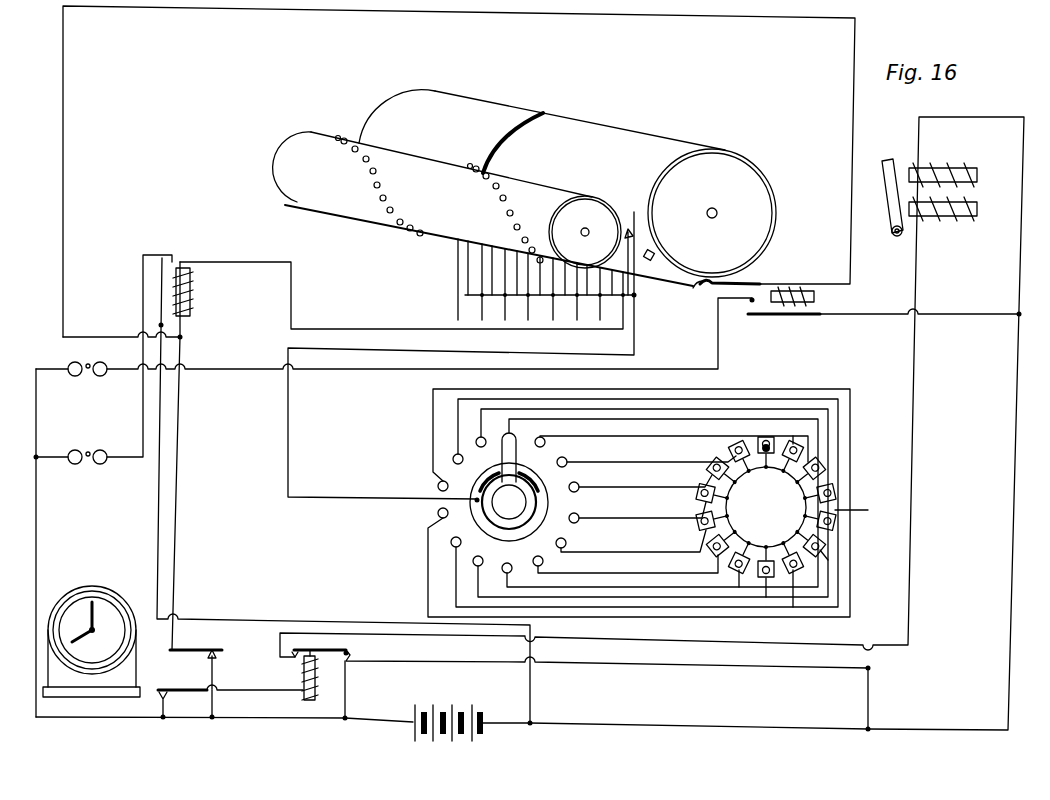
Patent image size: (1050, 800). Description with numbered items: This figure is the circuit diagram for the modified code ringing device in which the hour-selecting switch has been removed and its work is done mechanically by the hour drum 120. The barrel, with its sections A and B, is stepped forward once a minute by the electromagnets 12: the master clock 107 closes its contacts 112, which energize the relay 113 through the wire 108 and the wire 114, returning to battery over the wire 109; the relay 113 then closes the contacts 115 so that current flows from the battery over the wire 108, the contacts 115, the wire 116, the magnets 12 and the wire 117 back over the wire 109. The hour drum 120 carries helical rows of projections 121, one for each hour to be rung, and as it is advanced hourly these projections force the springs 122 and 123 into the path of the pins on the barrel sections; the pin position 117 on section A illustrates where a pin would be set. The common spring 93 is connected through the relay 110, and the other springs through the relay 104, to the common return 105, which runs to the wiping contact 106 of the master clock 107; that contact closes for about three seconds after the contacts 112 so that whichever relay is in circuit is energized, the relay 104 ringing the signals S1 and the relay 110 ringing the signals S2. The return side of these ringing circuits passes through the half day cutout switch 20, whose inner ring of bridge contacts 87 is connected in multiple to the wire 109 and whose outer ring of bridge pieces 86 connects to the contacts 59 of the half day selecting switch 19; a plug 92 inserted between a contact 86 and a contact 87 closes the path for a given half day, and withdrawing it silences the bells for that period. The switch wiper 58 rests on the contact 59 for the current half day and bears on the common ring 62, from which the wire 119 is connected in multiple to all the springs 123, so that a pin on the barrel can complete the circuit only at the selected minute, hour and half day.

The common return 105 is at (63, 228).
The relay 104 is at (193, 290).
The signals S2 is at (395, 349).
The signals S1 is at (103, 486).
The master clock 107 is at (94, 590).
The wiping contact 106 is at (215, 650).
The contacts 112 is at (230, 691).
The wire 108 is at (385, 722).
The wire 114 is at (652, 424).
The contacts 115 is at (300, 638).
The relay 113 is at (305, 695).
The hour drum 120 is at (300, 206).
The projections 121 is at (400, 225).
The springs 123 is at (640, 208).
The wire 117 is at (658, 254).
The springs 122 is at (628, 284).
The relay 110 is at (808, 284).
The common spring 93 is at (851, 307).
The electromagnets 12 is at (978, 178).
The wire 116 is at (913, 515).
The wire 119 is at (372, 500).
The common ring 62 is at (490, 527).
The contacts 59 is at (499, 446).
The switch wiper 58 is at (518, 452).
The half day selecting switch 19 is at (580, 505).
The half day cutout switch 20 is at (766, 507).
The inner ring of bridge contacts 87 is at (765, 492).
The outer ring of bridge pieces 86 is at (770, 440).
The plug 92 is at (771, 448).
The wire 109 is at (870, 509).